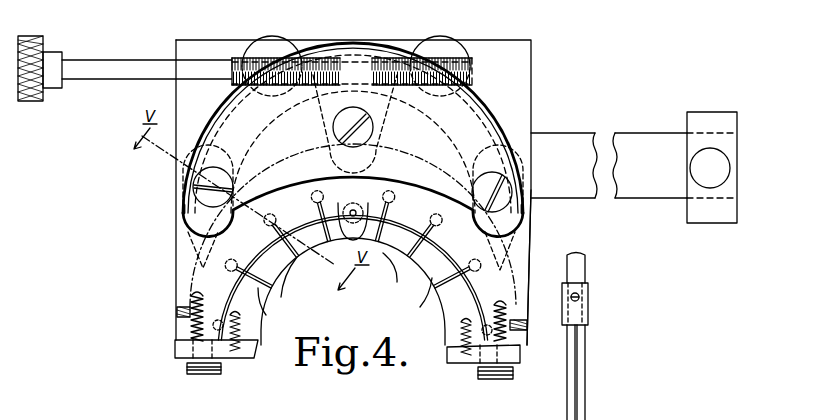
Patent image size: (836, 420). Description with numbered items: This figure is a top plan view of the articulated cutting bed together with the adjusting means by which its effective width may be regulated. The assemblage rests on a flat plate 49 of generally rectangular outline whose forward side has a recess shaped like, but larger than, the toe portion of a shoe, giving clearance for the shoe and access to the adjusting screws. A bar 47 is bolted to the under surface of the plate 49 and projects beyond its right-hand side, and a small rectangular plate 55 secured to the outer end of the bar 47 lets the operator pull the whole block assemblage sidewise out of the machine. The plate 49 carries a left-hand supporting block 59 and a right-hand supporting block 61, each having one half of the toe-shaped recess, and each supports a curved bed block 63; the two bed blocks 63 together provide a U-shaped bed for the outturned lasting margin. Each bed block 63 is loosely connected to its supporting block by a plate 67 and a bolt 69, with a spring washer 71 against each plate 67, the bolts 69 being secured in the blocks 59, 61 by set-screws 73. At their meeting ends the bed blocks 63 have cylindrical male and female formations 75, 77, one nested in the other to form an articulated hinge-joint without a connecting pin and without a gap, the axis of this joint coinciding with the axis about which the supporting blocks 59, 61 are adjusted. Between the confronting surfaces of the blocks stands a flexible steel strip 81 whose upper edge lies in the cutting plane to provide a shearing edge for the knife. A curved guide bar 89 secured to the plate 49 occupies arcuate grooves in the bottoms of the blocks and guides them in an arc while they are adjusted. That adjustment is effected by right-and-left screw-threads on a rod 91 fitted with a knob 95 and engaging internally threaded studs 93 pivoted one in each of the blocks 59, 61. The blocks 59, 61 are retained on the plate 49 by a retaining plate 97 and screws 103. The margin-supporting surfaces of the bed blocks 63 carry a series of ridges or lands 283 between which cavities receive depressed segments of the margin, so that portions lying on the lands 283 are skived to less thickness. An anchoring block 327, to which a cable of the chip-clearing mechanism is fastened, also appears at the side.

The bar 47 is at (648, 140).
The flat plate 49 is at (518, 93).
The small rectangular plate 55 is at (712, 120).
The left-hand supporting block 59 is at (178, 264).
The right-hand supporting block 61 is at (525, 244).
The curved bed block 63 is at (277, 300).
The plate 67 is at (187, 352).
The bolt 69 is at (192, 324).
The spring washer 71 is at (220, 362).
The set-screw 73 is at (190, 311).
The cylindrical male formation 75 is at (344, 238).
The cylindrical female formation 77 is at (347, 202).
The flexible steel strip 81 is at (414, 200).
The curved guide bar 89 is at (486, 100).
The rod 91 is at (190, 72).
The internally threaded stud 93 is at (271, 55).
The knob 95 is at (45, 45).
The retaining plate 97 is at (358, 47).
The screw 103 is at (205, 199).
The ridges or lands 283 is at (345, 306).
The anchoring block 327 is at (590, 299).